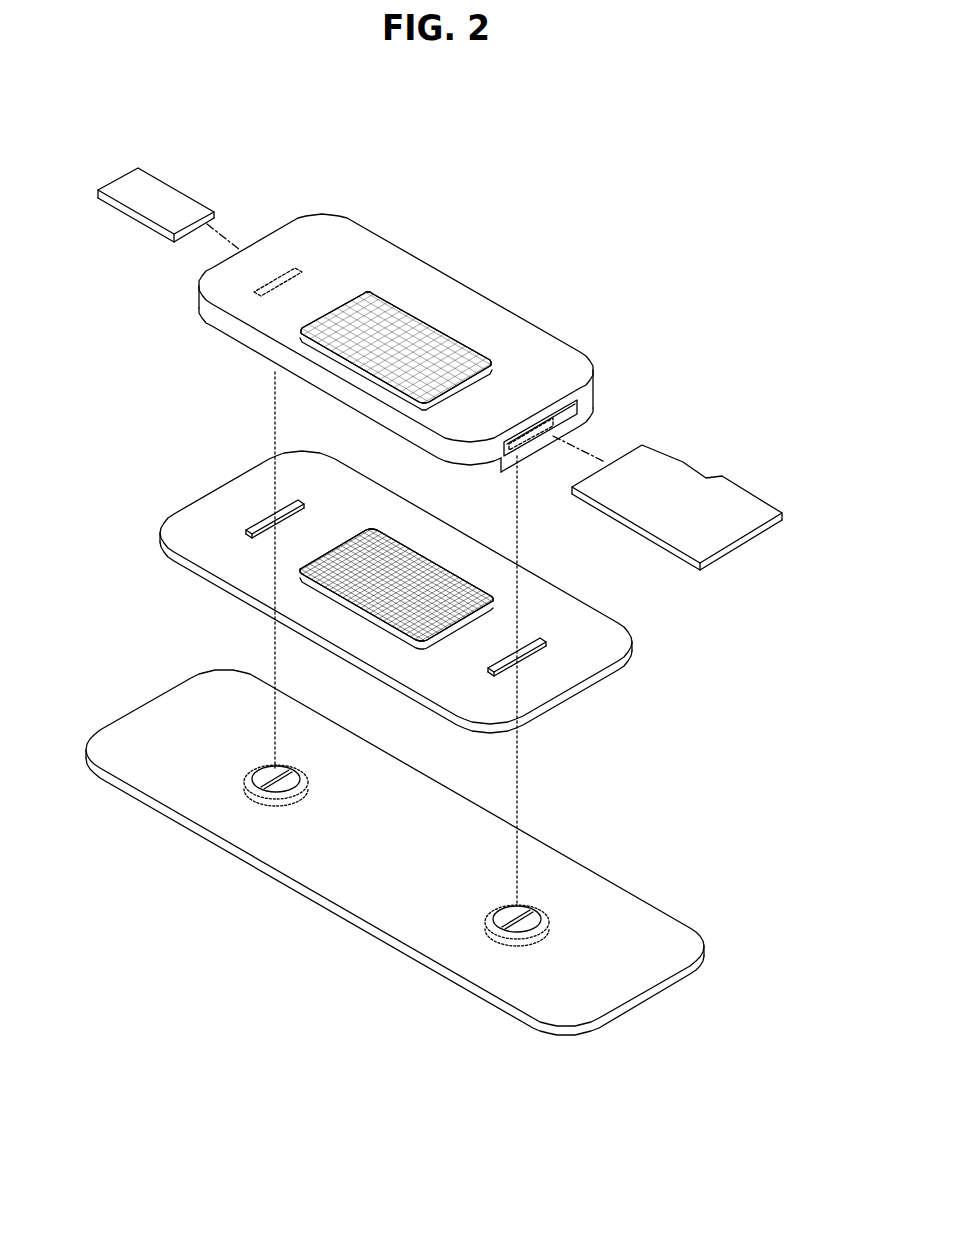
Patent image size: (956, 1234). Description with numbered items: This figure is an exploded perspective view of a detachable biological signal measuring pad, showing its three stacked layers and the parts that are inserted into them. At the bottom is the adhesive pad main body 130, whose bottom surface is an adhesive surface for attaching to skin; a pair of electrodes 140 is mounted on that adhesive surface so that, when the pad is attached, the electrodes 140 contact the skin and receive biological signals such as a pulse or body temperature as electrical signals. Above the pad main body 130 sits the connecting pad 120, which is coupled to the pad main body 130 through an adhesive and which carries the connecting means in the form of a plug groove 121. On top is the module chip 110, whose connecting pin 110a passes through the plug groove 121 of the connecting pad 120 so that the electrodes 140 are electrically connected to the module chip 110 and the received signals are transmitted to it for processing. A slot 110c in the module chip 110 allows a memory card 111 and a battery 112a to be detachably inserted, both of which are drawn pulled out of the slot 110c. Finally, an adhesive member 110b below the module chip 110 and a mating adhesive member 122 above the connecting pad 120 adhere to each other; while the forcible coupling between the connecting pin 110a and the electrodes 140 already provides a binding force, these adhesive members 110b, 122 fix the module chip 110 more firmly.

The module chip 110 is at (176, 308).
The connecting pin 110a is at (294, 278).
The adhesive member 110b is at (428, 324).
The slot 110c is at (594, 400).
The memory card 111 is at (747, 542).
The battery 112a is at (132, 182).
The connecting pad 120 is at (214, 489).
The plug groove 121 is at (540, 655).
The adhesive member 122 is at (424, 552).
The adhesive pad main body 130 is at (134, 705).
The electrode 140 is at (260, 803).